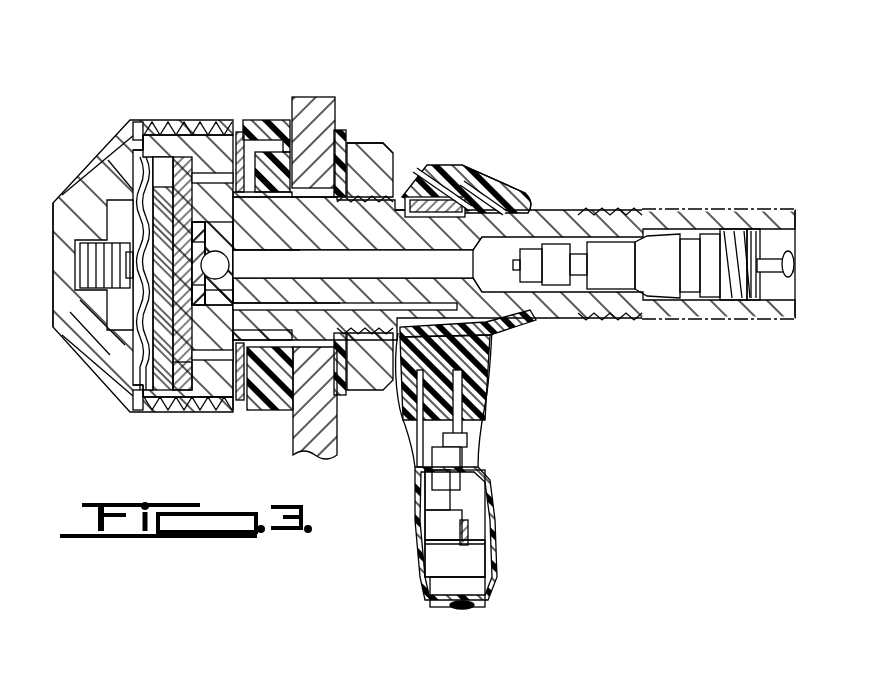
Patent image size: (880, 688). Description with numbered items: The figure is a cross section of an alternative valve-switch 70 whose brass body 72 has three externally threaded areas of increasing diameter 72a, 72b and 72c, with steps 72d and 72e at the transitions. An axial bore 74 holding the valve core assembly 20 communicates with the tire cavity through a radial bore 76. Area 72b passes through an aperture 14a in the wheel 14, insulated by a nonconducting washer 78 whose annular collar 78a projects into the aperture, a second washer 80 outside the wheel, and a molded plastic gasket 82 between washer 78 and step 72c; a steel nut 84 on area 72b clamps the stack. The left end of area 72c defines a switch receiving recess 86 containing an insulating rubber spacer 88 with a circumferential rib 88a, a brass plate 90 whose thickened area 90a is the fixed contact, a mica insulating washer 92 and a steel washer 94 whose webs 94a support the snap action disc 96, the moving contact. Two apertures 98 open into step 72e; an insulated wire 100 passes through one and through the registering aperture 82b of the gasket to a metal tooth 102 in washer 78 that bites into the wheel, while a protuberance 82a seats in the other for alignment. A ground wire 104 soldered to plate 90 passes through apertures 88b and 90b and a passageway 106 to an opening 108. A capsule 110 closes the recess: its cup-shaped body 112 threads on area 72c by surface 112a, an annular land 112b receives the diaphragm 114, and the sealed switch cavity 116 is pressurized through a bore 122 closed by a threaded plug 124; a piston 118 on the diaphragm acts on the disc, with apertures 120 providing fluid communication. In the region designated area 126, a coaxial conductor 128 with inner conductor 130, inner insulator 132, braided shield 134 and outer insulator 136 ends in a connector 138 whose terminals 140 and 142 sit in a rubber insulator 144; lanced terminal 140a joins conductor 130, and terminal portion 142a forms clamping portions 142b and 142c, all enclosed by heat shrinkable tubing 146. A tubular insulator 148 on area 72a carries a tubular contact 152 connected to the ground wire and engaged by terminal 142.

The wheel 14 is at (328, 100).
The aperture 14a is at (285, 403).
The valve core assembly 20 is at (650, 243).
The valve-switch 70 is at (590, 150).
The body 72 is at (585, 212).
The area of increased diameter 72a is at (688, 324).
The area of increased diameter 72b is at (328, 222).
The area of increased diameter 72c is at (218, 135).
The step 72d is at (415, 218).
The step 72e is at (226, 410).
The axial bore 74 is at (360, 276).
The radially disposed bore 76 is at (240, 250).
The nonconducting washer 78 is at (270, 120).
The annular collar 78a is at (312, 186).
The nonconducting washer 80 is at (342, 133).
The molded plastic gasket 82 is at (238, 132).
The protuberance 82a is at (245, 335).
The registering aperture 82b is at (262, 198).
The nut 84 is at (370, 145).
The switch receiving recess 86 is at (107, 350).
The insulating rubber spacer 88 is at (193, 247).
The circumferential rib 88a is at (180, 392).
The aperture 88b is at (231, 268).
The brass plate 90 is at (183, 380).
The area of increased thickness 90a is at (190, 240).
The aperture 90b is at (198, 322).
The mica insulating washer 92 is at (150, 390).
The steel washer 94 is at (163, 157).
The inwardly projecting webs 94a is at (158, 170).
The snap action disc 96 is at (143, 225).
The apertures 98 is at (200, 185).
The insulated wire 100 is at (200, 173).
The metal tooth 102 is at (330, 97).
The ground wire 104 is at (328, 308).
The passageway 106 is at (258, 308).
The opening 108 is at (440, 298).
The capsule 110 is at (97, 150).
The body 112 is at (92, 180).
The internal circumferential surface 112a is at (165, 135).
The annular land 112b is at (128, 398).
The diaphragm 114 is at (125, 372).
The switch cavity 116 is at (128, 185).
The piston 118 is at (192, 225).
The apertures 120 is at (138, 122).
The bore 122 is at (112, 282).
The threaded plug 124 is at (95, 243).
The area 126 is at (505, 343).
The coaxial conductor 128 is at (433, 598).
The inner conductor 130 is at (450, 445).
The inner insulator 132 is at (448, 480).
The braided shield conductor 134 is at (470, 525).
The outer insulator 136 is at (485, 541).
The connector 138 is at (490, 175).
The first terminal 140 is at (480, 360).
The lanced terminal 140a is at (485, 460).
The second terminal 142 is at (400, 415).
The terminal portion 142a is at (422, 468).
The first C-shaped clamping portion 142b is at (435, 500).
The second C-shaped clamping portion 142c is at (440, 552).
The molded rubber insulator 144 is at (500, 185).
The heat shrinkable rubber tubing 146 is at (500, 540).
The tubular cylindrical insulator 148 is at (420, 170).
The tubular cylindrical contact 152 is at (450, 185).